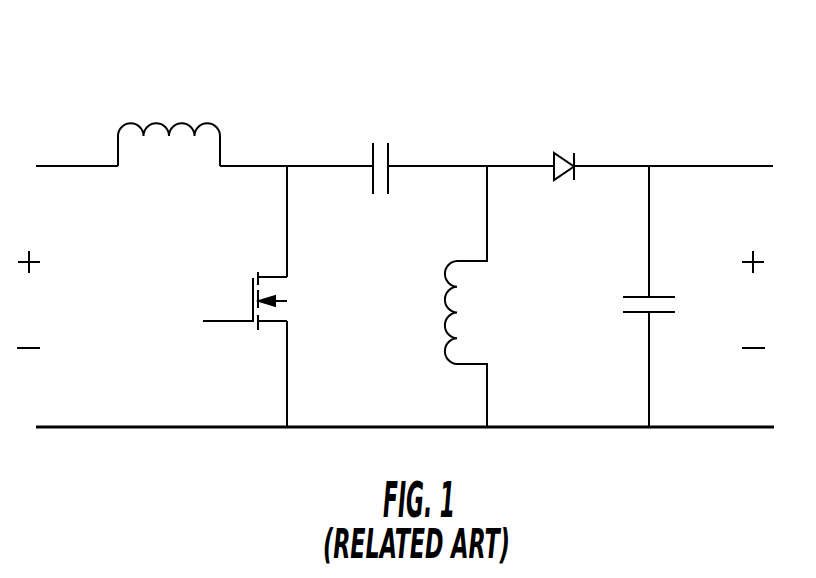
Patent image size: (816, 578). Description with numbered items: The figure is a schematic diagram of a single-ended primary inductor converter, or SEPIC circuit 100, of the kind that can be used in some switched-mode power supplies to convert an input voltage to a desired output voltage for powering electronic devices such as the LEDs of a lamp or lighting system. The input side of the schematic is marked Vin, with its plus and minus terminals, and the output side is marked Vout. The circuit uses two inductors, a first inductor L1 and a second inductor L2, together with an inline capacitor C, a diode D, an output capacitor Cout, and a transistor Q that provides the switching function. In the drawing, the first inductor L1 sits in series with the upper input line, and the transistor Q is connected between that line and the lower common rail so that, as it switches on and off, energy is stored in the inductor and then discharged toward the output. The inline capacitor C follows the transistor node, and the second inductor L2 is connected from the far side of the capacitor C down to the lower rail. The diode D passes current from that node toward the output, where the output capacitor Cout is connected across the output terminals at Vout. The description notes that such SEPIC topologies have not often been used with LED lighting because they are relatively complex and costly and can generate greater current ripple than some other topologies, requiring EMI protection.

The single-ended primary inductor converter (SEPIC) circuit 100 is at (707, 74).
The first inductor L1 is at (169, 126).
The inline capacitor C is at (380, 151).
The diode D is at (564, 145).
The transistor Q is at (259, 296).
The second inductor L2 is at (452, 296).
The output capacitor Cout is at (625, 296).
The input voltage Vin is at (31, 299).
The output voltage Vout is at (751, 299).